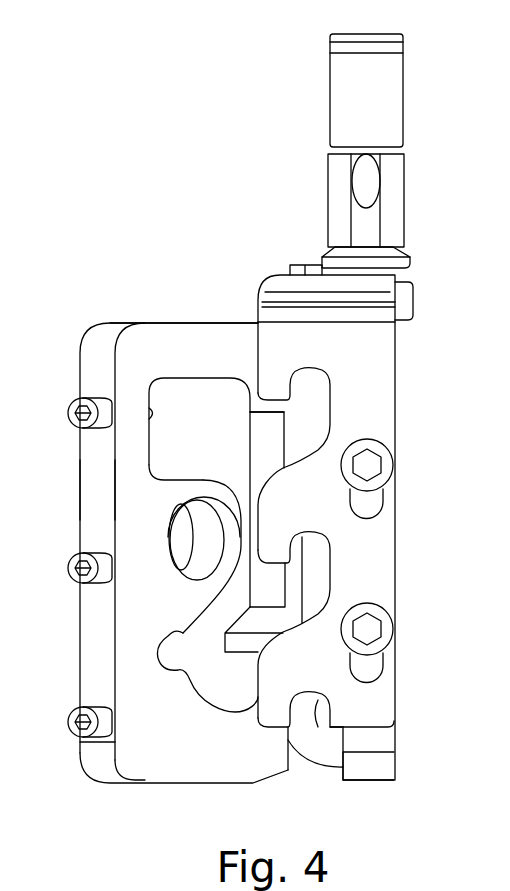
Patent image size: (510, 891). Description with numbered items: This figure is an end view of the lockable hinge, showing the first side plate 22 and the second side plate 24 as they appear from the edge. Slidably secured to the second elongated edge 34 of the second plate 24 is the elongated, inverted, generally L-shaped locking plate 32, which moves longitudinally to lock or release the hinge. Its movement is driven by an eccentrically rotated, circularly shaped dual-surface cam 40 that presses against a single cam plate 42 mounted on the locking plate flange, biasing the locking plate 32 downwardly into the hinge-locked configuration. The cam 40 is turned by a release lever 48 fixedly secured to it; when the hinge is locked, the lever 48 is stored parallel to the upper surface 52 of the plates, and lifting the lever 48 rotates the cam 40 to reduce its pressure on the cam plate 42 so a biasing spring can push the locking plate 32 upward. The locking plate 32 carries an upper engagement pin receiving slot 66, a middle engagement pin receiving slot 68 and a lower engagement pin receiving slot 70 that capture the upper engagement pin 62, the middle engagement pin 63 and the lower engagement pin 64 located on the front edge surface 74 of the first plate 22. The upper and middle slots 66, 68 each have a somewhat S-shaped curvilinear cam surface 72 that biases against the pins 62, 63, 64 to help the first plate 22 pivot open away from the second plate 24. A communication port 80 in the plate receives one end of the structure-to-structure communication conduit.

The first side plate 22 is at (142, 783).
The second side plate 24 is at (365, 783).
The locking plate 32 is at (268, 315).
The second elongated edge 34 is at (380, 745).
The dual-surface cam 40 is at (335, 180).
The cam plate 42 is at (393, 253).
The release lever 48 is at (397, 70).
The upper surface 52 is at (140, 323).
The upper engagement pin 62 is at (92, 397).
The middle engagement pin 63 is at (93, 587).
The lower engagement pin 64 is at (93, 743).
The upper engagement pin receiving slot 66 is at (322, 376).
The middle engagement pin receiving slot 68 is at (322, 540).
The lower engagement pin receiving slot 70 is at (327, 703).
The curvilinear cam surface 72 is at (312, 458).
The front edge surface 74 is at (90, 477).
The communication port 80 is at (197, 568).